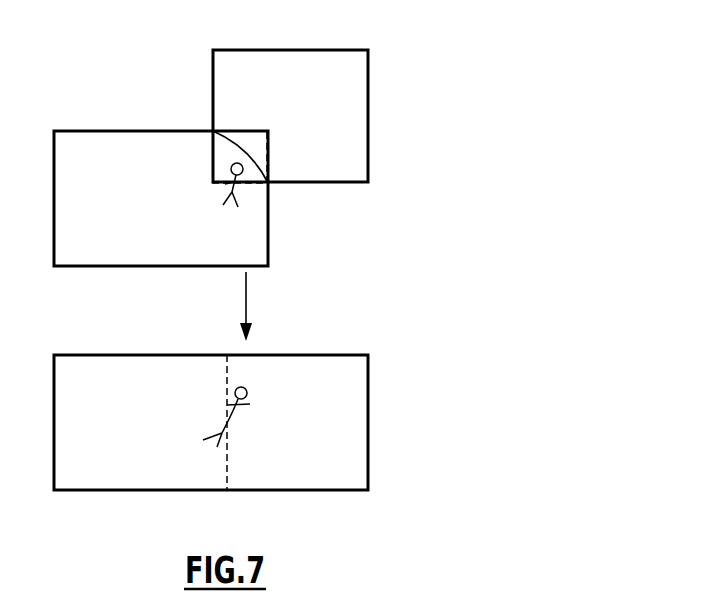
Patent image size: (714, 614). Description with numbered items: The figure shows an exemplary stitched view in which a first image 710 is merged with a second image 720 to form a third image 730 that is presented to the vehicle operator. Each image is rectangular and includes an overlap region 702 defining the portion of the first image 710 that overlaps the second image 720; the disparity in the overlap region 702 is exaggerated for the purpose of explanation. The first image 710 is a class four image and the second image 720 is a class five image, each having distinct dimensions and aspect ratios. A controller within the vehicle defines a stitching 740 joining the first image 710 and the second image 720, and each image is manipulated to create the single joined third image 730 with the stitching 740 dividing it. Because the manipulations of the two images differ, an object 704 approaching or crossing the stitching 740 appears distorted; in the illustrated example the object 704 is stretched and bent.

The overlap region 702 is at (252, 139).
The object 704 is at (237, 198).
The first image 710 is at (106, 131).
The second image 720 is at (332, 50).
The third image 730 is at (253, 492).
The stitching 740 is at (257, 160).